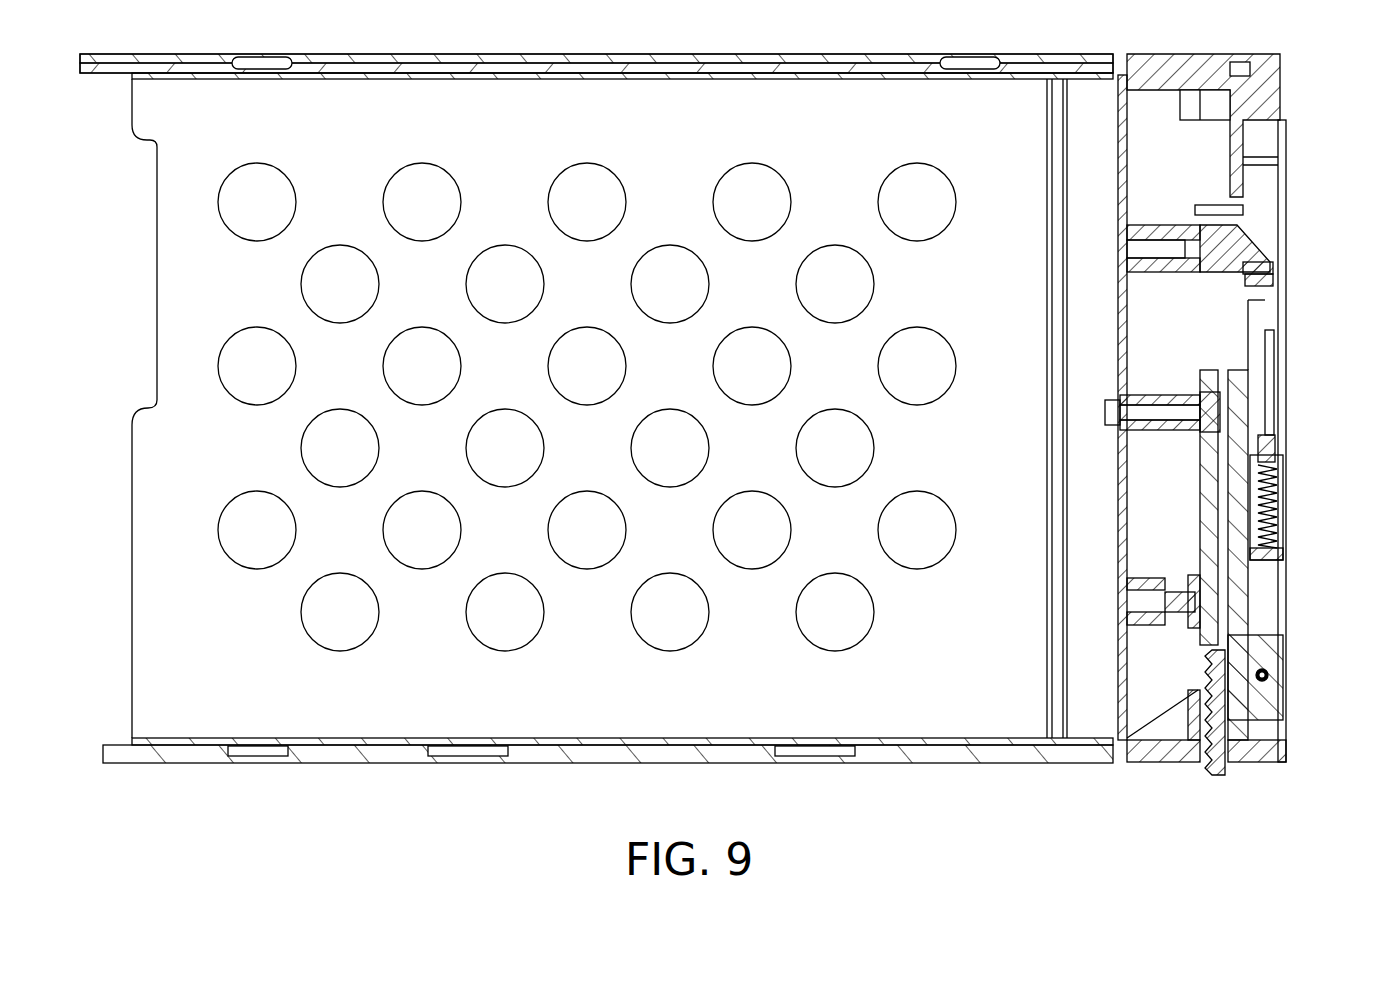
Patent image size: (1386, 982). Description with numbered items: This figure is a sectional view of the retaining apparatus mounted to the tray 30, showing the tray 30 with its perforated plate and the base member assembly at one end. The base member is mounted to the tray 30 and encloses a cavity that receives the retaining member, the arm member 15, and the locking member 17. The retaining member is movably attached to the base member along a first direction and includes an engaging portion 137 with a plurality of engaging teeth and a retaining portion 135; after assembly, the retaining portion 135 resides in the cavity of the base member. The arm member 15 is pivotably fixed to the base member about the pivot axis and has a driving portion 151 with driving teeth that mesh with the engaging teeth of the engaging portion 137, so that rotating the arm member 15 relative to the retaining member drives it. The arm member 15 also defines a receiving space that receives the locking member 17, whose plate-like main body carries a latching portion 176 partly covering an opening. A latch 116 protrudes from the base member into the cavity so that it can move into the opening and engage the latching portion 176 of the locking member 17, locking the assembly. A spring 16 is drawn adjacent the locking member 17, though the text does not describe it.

The tray 30 is at (855, 705).
The latch 116 is at (1262, 270).
The latching portion 176 is at (1255, 281).
The locking member 17 is at (1276, 445).
The spring 16 is at (1275, 497).
The arm member 15 is at (1282, 545).
The driving portion 151 is at (1268, 690).
The retaining portion 135 is at (1213, 768).
The engaging portion 137 is at (1216, 740).